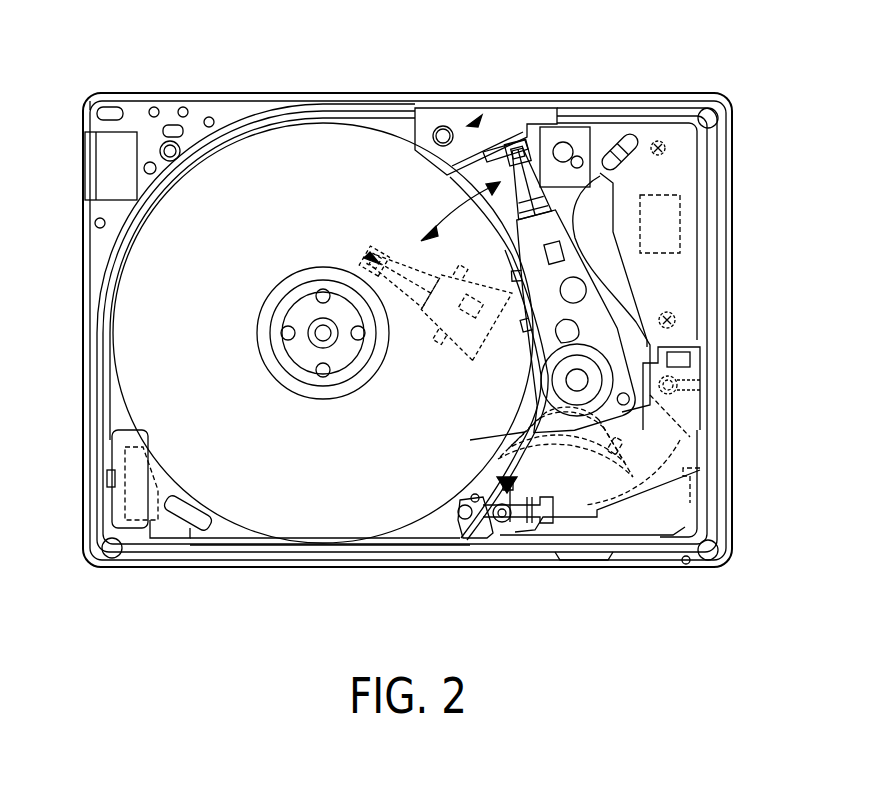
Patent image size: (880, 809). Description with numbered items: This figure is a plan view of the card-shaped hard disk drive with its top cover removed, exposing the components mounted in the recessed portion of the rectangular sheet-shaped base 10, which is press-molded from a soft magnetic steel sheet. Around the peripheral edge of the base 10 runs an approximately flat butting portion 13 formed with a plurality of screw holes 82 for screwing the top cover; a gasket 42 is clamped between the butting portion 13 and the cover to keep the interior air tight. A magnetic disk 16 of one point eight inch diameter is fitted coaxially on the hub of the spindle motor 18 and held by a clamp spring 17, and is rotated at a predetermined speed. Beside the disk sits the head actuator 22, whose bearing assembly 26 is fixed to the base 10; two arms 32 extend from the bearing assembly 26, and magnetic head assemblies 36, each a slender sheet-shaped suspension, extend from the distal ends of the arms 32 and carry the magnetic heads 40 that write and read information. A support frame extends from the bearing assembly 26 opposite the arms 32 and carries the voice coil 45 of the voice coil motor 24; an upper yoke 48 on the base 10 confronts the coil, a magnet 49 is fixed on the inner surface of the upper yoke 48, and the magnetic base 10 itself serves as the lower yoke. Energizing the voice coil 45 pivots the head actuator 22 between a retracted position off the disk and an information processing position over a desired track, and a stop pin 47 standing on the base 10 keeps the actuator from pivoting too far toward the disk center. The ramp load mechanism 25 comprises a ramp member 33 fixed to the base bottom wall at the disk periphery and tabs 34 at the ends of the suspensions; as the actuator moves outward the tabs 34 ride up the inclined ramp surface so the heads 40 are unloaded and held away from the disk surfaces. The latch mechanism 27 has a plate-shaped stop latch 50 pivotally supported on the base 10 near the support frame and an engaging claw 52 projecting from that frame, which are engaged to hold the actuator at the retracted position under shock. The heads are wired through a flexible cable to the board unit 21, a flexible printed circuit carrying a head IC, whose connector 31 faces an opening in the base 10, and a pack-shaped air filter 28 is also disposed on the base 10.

The base 10 is at (136, 101).
The butting portion 13 is at (197, 101).
The magnetic disk 16 is at (292, 137).
The clamp spring 17 is at (297, 349).
The spindle motor 18 is at (276, 393).
The board unit 21 is at (692, 270).
The head actuator 22 is at (525, 383).
The voice coil motor 24 is at (495, 451).
The ramp load mechanism 25 is at (470, 118).
The bearing assembly 26 is at (550, 368).
The latch mechanism 27 is at (483, 553).
The air filter 28 is at (132, 480).
The connector 31 is at (673, 213).
The arm 32 is at (558, 331).
The ramp member 33 is at (460, 128).
The tab 34 is at (500, 146).
The magnetic head assembly 36 is at (517, 215).
The magnetic head 40 is at (520, 140).
The gasket 42 is at (390, 563).
The voice coil 45 is at (517, 430).
The stop pin 47 is at (677, 393).
The upper yoke 48 is at (688, 435).
The magnet 49 is at (702, 467).
The stop latch 50 is at (516, 522).
The engaging claw 52 is at (593, 258).
The screw hole 82 is at (706, 112).